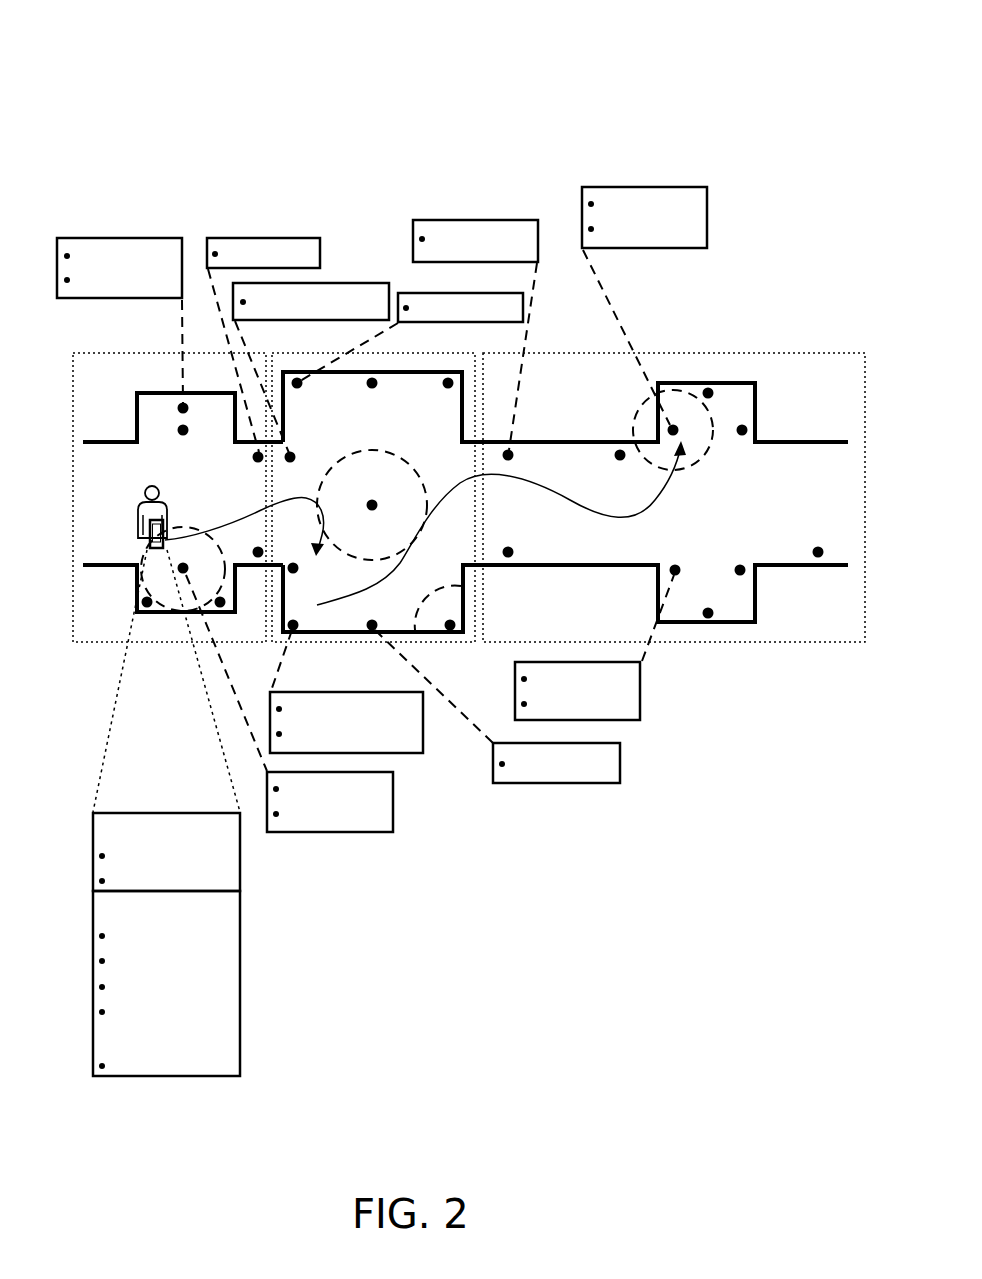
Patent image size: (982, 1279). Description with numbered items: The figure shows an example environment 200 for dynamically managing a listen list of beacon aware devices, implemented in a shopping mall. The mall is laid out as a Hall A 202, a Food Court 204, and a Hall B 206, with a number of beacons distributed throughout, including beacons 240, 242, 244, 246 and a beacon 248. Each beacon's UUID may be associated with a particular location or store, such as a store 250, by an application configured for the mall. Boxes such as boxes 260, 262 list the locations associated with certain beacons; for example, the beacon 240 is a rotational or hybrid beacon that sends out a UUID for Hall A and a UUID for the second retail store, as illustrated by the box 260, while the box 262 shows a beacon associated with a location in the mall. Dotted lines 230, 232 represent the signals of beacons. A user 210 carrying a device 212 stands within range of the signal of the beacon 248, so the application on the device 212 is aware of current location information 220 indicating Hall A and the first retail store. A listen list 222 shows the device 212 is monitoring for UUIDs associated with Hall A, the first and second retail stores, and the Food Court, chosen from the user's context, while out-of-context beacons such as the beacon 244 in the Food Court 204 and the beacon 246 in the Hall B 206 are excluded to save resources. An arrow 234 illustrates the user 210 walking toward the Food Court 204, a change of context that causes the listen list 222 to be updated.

The environment 200 is at (178, 73).
The Hall A 202 is at (72, 385).
The Food Court 204 is at (417, 645).
The Hall B 206 is at (738, 351).
The user 210 is at (145, 496).
The device 212 is at (149, 541).
The current location information 220 is at (93, 860).
The listen list 222 is at (93, 958).
The dotted line 230 is at (372, 449).
The dotted line 232 is at (422, 597).
The arrow 234 is at (261, 512).
The beacon 240 is at (180, 406).
The beacon 242 is at (256, 457).
The beacon 244 is at (294, 627).
The beacon 246 is at (675, 572).
The beacon 248 is at (181, 570).
The store 250 is at (136, 417).
The box 260 is at (85, 238).
The box 262 is at (263, 238).